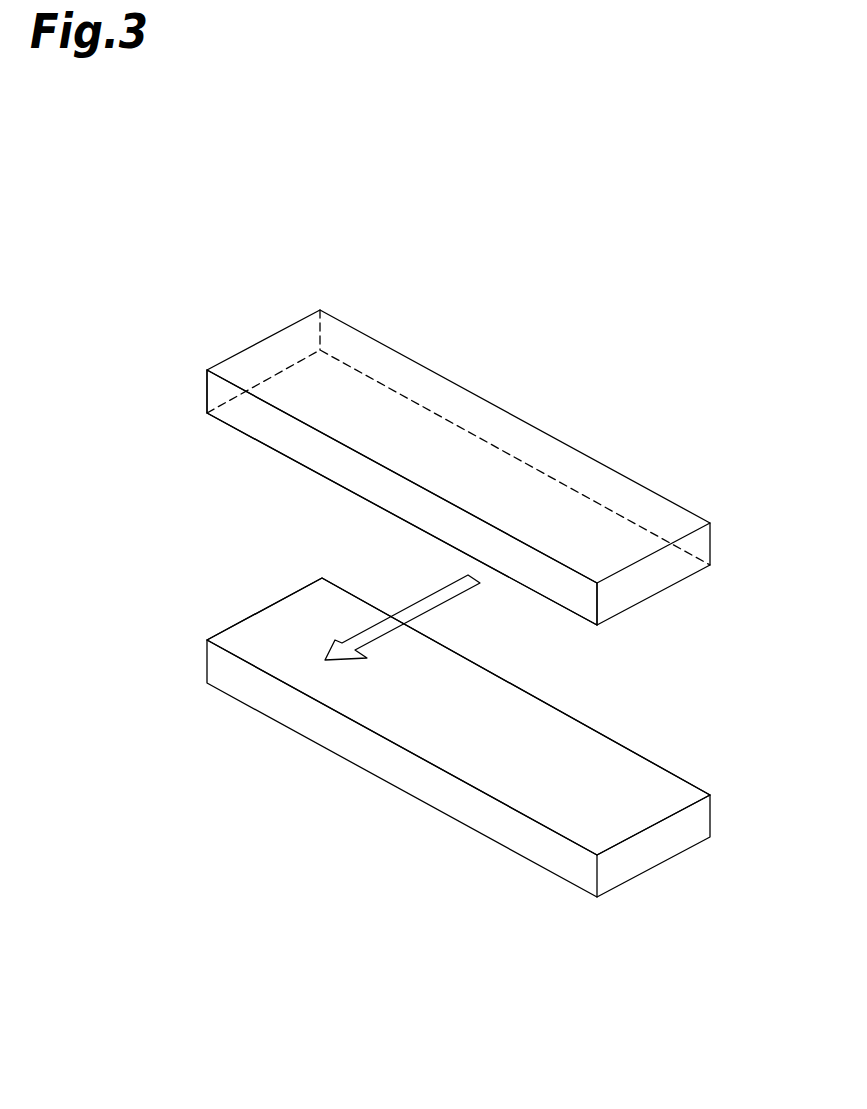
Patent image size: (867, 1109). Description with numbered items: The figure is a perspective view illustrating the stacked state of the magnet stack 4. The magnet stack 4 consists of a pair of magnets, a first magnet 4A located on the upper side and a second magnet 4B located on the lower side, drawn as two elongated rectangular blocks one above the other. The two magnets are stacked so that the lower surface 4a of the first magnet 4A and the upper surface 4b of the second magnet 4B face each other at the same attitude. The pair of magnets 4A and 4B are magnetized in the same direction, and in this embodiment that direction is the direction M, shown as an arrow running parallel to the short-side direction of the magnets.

The magnet stack 4 is at (142, 223).
The first magnet 4A is at (712, 545).
The second magnet 4B is at (712, 812).
The lower surface 4a is at (275, 430).
The upper surface 4b is at (243, 632).
The magnetization direction M is at (455, 598).